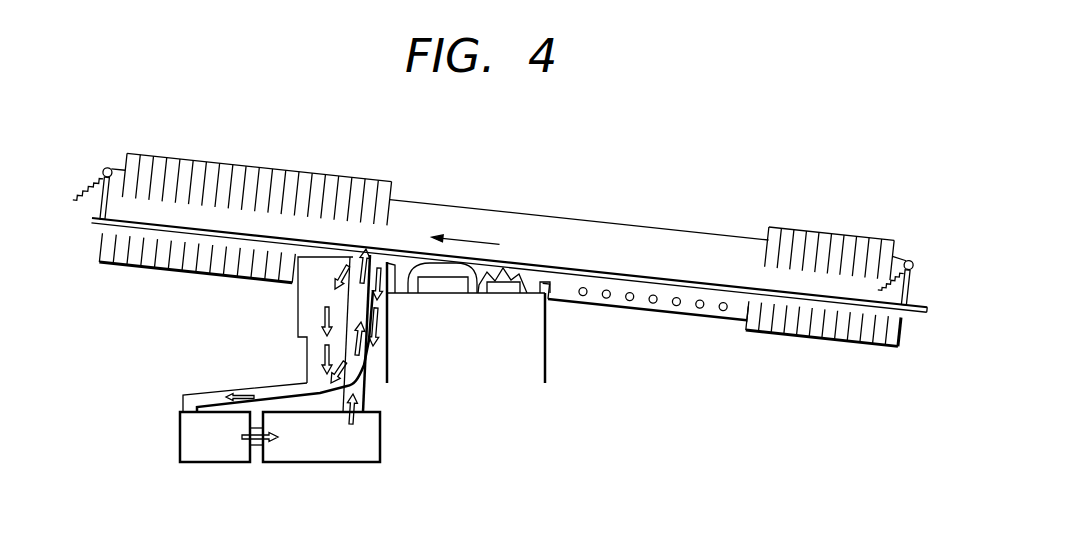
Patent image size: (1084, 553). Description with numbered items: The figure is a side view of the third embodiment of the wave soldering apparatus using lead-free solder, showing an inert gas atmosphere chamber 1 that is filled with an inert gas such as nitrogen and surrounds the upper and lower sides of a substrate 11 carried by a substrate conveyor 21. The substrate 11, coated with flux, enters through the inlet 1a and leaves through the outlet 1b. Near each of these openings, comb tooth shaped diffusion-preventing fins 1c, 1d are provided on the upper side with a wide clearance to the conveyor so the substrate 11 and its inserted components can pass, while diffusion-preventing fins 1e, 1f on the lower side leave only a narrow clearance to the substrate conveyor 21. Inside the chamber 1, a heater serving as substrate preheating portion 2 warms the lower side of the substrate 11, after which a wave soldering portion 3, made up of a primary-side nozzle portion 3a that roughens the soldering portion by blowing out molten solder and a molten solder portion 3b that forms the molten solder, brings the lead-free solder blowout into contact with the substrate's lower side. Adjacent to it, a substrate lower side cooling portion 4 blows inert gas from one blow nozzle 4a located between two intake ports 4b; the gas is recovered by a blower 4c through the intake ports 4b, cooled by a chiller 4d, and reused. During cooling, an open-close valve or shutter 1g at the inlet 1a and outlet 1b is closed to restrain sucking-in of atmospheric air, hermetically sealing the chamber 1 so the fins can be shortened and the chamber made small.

The inert gas atmosphere chamber 1 is at (575, 217).
The inlet of the chamber 1a is at (897, 292).
The outlet of the chamber 1b is at (120, 203).
The diffusion-preventing fin 1c is at (868, 240).
The diffusion-preventing fin 1d is at (240, 178).
The diffusion-preventing fin 1e is at (767, 335).
The diffusion-preventing fin 1f is at (192, 268).
The open-close valve or shutter 1g is at (97, 197).
The substrate preheating portion 2 is at (655, 313).
The wave soldering portion 3 is at (507, 353).
The primary-side nozzle portion 3a is at (445, 272).
The molten solder portion 3b is at (510, 293).
The substrate lower side cooling portion 4 is at (353, 295).
The blow nozzle 4a is at (320, 335).
The intake port 4b is at (353, 262).
The blower 4c is at (220, 443).
The chiller 4d is at (310, 443).
The substrate 11 is at (497, 260).
The substrate conveyor 21 is at (625, 279).